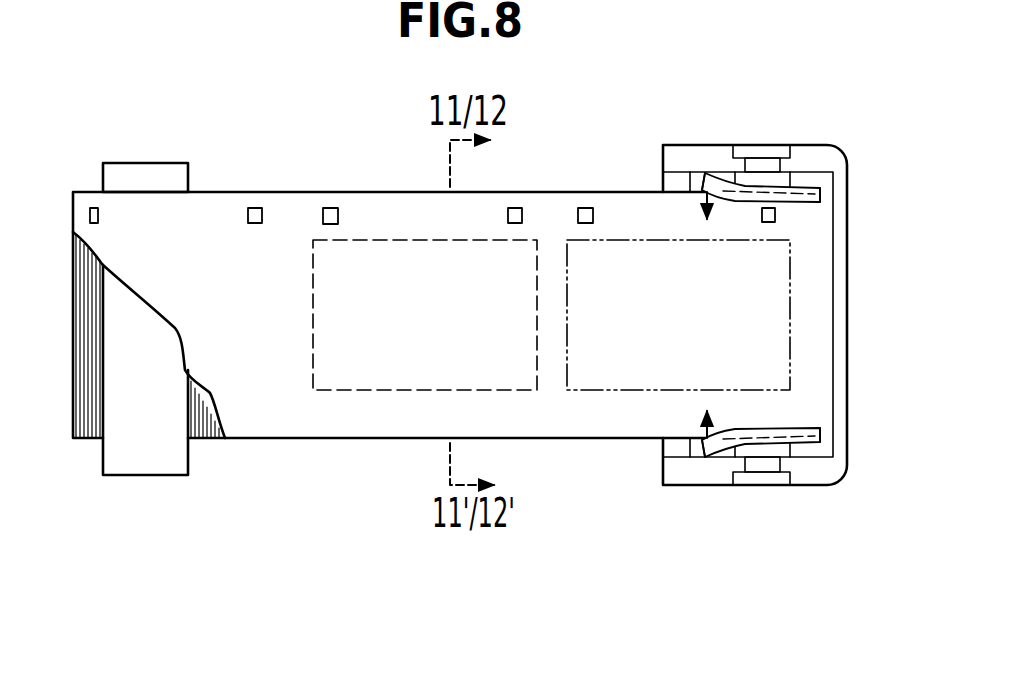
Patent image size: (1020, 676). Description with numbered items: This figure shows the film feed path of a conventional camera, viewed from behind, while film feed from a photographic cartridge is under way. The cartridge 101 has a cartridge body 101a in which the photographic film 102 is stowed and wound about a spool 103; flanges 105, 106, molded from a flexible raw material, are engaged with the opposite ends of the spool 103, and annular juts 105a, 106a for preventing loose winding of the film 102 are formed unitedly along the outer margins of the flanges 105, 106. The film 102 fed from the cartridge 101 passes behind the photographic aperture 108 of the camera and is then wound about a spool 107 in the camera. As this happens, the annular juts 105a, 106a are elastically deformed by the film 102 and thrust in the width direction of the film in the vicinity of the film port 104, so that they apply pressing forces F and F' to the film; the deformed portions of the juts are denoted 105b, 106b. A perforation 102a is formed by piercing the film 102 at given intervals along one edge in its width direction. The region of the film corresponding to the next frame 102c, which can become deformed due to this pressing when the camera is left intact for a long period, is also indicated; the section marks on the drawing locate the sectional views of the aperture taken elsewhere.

The cartridge 101 is at (656, 106).
The cartridge body 101a is at (668, 145).
The photographic film 102 is at (522, 192).
The perforation 102a is at (331, 208).
The next frame 102c is at (602, 392).
The spool 103 is at (767, 163).
The film port 104 is at (668, 445).
The flange 105 is at (787, 145).
The annular jut 105a is at (810, 203).
The deformed portion 105b is at (712, 177).
The flange 106 is at (798, 488).
The annular jut 106a is at (810, 427).
The deformed portion 106b is at (713, 457).
The spool 107 is at (150, 163).
The photographic aperture 108 is at (365, 390).